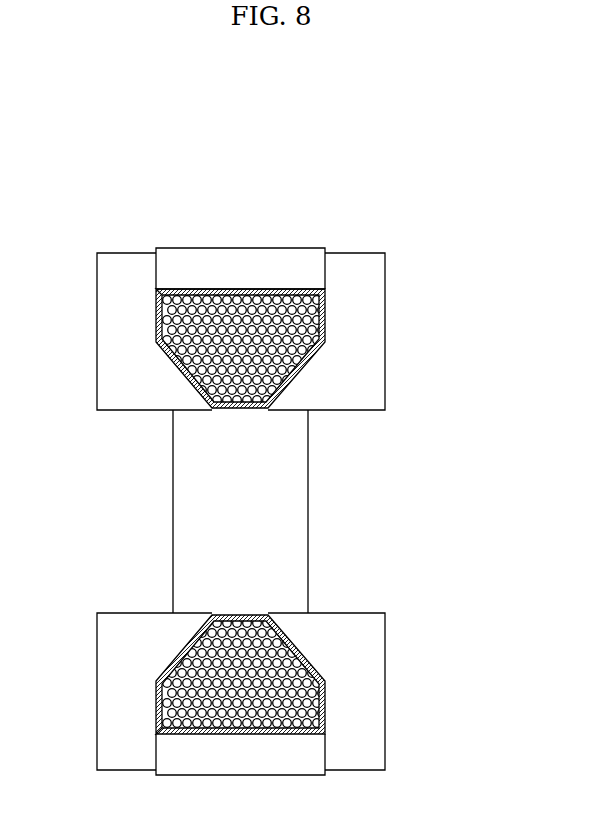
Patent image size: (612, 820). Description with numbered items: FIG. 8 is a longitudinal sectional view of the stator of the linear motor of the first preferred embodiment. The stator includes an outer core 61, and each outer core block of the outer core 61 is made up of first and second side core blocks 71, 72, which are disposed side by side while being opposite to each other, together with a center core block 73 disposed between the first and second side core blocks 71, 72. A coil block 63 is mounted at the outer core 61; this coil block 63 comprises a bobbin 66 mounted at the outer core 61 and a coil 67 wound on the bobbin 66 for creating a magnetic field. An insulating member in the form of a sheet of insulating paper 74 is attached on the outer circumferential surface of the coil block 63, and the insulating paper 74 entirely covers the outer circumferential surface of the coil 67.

The outer core 61 is at (160, 163).
The first side core block 71 is at (130, 254).
The second side core block 72 is at (345, 254).
The center core block 73 is at (273, 252).
The insulating paper 74 is at (157, 292).
The coil block 63 is at (463, 312).
The coil 67 is at (325, 305).
The bobbin 66 is at (325, 332).